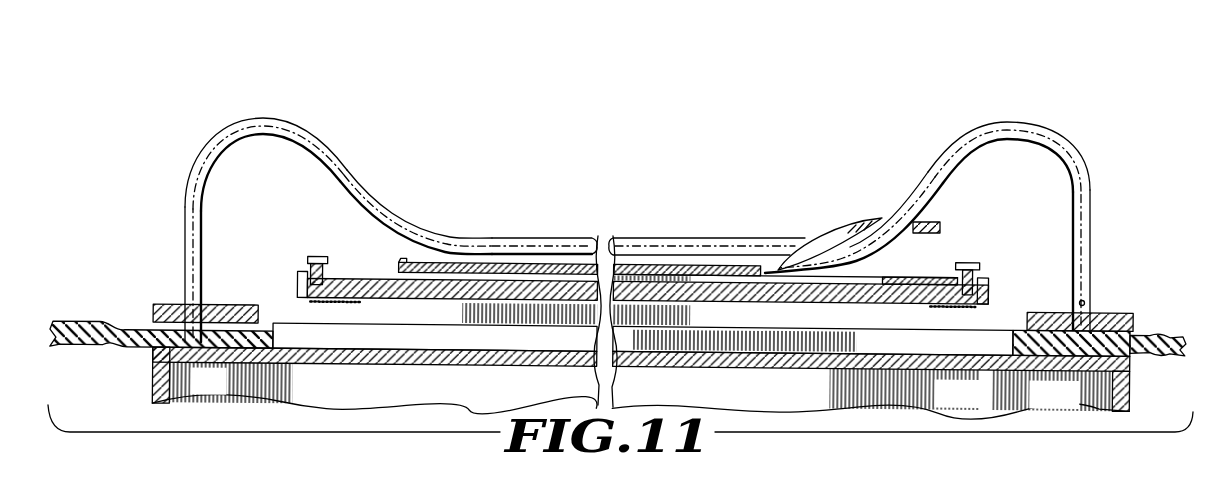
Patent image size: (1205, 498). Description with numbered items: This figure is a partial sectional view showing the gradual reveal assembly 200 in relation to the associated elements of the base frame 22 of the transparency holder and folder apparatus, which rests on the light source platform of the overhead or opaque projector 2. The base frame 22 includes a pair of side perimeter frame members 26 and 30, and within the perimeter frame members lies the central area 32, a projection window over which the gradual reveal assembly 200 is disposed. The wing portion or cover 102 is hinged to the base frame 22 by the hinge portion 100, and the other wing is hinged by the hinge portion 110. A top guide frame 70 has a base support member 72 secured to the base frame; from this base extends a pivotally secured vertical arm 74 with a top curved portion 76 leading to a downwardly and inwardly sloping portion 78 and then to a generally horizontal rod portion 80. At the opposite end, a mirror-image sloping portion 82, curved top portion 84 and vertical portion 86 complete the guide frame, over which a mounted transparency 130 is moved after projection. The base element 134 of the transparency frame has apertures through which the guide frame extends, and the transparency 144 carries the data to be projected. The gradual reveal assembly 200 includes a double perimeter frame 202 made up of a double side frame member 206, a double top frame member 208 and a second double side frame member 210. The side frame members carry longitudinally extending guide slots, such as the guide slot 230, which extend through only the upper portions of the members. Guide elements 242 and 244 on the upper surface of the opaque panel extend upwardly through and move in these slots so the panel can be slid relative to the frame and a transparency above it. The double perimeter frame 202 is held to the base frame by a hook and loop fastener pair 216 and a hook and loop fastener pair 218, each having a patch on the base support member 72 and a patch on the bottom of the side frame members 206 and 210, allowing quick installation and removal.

The overhead or opaque projector 2 is at (262, 378).
The base frame 22 is at (133, 357).
The side perimeter frame member 26 is at (1052, 390).
The side perimeter frame member 30 is at (230, 382).
The central area 32 is at (904, 389).
The top guide frame 70 is at (960, 212).
The base support member 72 is at (392, 318).
The vertical arm 74 is at (1093, 247).
The top curved portion 76 is at (1040, 140).
The sloping portion 78 is at (943, 158).
The horizontal rod portion 80 is at (750, 252).
The sloping portion 82 is at (362, 196).
The curved top portion 84 is at (230, 133).
The vertical portion 86 is at (190, 229).
The hinge portion 100 is at (1143, 330).
The wing portion or cover 102 is at (1160, 356).
The hinge portion 110 is at (93, 323).
The mounted transparency 130 is at (840, 222).
The base element 134 is at (930, 223).
The transparency 144 is at (690, 287).
The gradual reveal assembly 200 is at (296, 256).
The double perimeter frame 202 is at (573, 262).
The double side frame member 206 is at (987, 283).
The double top frame member 208 is at (403, 266).
The double side frame member 210 is at (297, 278).
The hook and loop fastener pair 216 is at (962, 306).
The hook and loop fastener pair 218 is at (318, 306).
The guide slot 230 is at (957, 267).
The guide element 242 is at (958, 262).
The guide element 244 is at (312, 257).